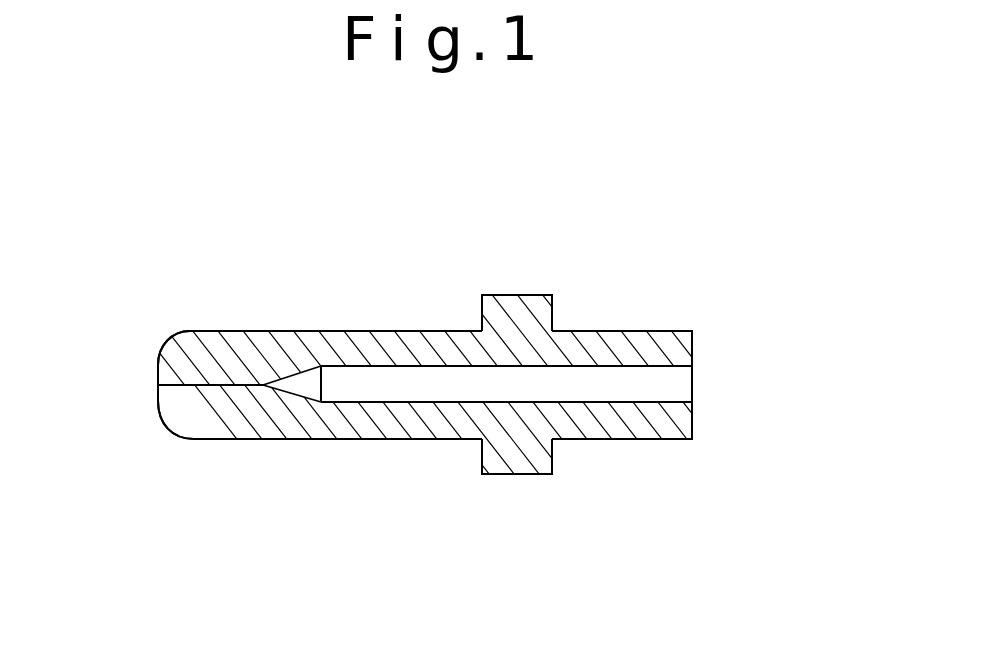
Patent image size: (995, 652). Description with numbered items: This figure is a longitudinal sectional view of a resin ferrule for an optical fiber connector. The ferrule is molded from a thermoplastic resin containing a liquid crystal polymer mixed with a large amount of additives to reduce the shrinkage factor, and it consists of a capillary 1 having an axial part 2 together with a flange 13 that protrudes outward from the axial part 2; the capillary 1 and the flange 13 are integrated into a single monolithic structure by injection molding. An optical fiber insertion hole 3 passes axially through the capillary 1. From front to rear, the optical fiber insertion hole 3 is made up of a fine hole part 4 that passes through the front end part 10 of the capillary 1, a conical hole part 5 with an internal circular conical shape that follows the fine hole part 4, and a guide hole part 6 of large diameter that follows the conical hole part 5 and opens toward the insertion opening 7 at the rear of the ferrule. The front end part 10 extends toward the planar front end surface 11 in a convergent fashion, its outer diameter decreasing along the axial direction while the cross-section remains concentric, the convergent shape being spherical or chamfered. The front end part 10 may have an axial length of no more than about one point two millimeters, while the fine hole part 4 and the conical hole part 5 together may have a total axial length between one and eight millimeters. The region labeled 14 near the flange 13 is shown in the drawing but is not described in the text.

The capillary 1 is at (260, 323).
The axial part 2 is at (318, 331).
The optical fiber insertion hole 3 is at (644, 366).
The fine hole part 4 is at (230, 388).
The conical hole part 5 is at (308, 400).
The guide hole part 6 is at (400, 403).
The insertion opening 7 is at (692, 390).
The front end part 10 is at (171, 432).
The front end surface 11 is at (158, 394).
The flange 13 is at (512, 297).
The flange side surface 14 is at (556, 310).